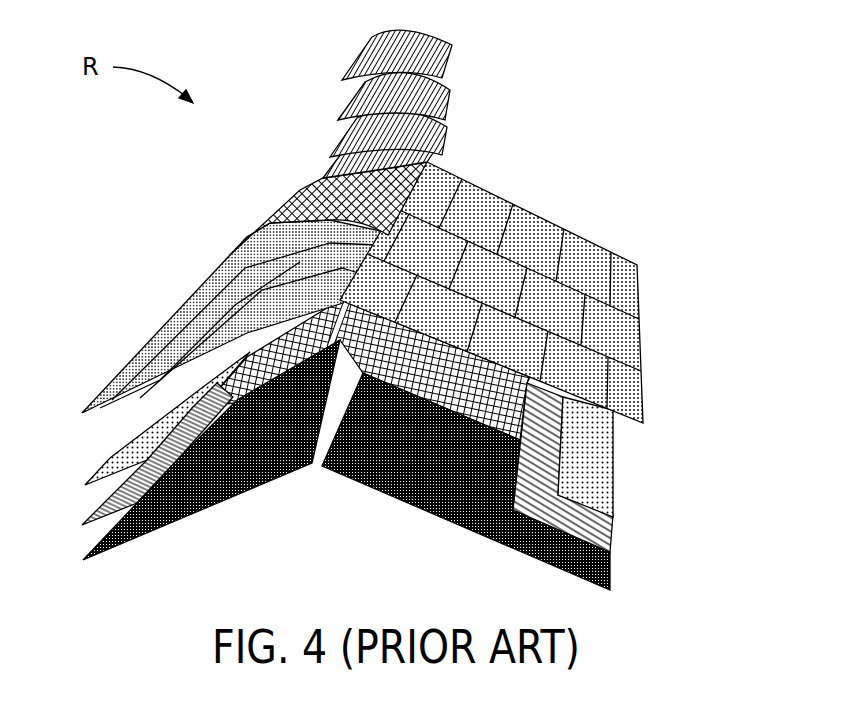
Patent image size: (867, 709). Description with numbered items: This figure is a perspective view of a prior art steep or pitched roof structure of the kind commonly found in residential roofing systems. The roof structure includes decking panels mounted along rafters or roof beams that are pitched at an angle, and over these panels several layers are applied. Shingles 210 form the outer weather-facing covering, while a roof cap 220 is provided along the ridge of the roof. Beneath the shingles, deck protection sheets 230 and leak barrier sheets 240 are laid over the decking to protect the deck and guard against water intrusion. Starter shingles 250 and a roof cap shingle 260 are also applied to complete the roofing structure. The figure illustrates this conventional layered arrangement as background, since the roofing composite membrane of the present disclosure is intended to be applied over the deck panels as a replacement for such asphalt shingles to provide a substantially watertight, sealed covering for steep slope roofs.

The shingles 210 is at (538, 192).
The roof cap 220 is at (307, 200).
The deck protection sheets 230 is at (447, 390).
The leak barrier sheets 240 is at (120, 480).
The starter shingles 250 is at (603, 470).
The roof cap shingle 260 is at (466, 77).